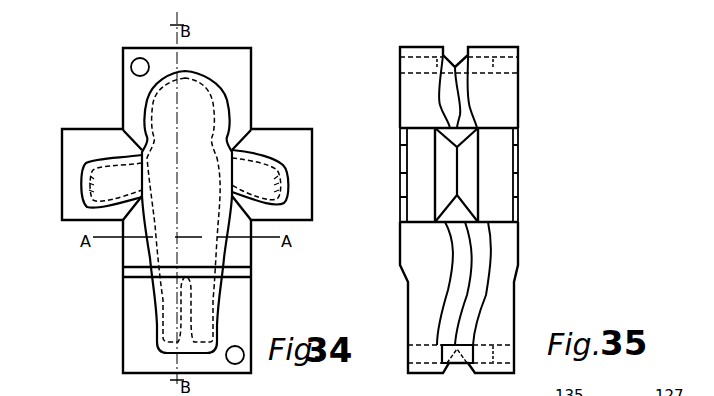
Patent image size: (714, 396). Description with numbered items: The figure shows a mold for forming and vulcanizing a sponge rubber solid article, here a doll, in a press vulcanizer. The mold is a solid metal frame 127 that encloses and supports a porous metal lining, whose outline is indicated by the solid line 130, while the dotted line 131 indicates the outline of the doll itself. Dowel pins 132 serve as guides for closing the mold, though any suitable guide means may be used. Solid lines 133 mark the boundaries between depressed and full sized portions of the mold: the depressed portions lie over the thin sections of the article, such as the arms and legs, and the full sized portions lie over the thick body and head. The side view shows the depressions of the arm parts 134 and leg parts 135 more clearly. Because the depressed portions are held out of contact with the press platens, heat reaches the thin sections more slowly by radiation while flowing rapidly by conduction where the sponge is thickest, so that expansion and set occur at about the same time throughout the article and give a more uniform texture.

In FIG. 34, the solid metal frame 127 is at (80, 150).
In FIG. 35, the solid metal frame 127 is at (498, 101).
In FIG. 34, the solid line 130 is at (225, 97).
In FIG. 34, the dotted line 131 is at (217, 117).
In FIG. 34, the dowel pins 132 is at (131, 65).
In FIG. 34, the solid lines 133 is at (63, 208).
In FIG. 35, the arm parts 134 is at (519, 176).
In FIG. 35, the leg parts 135 is at (409, 306).